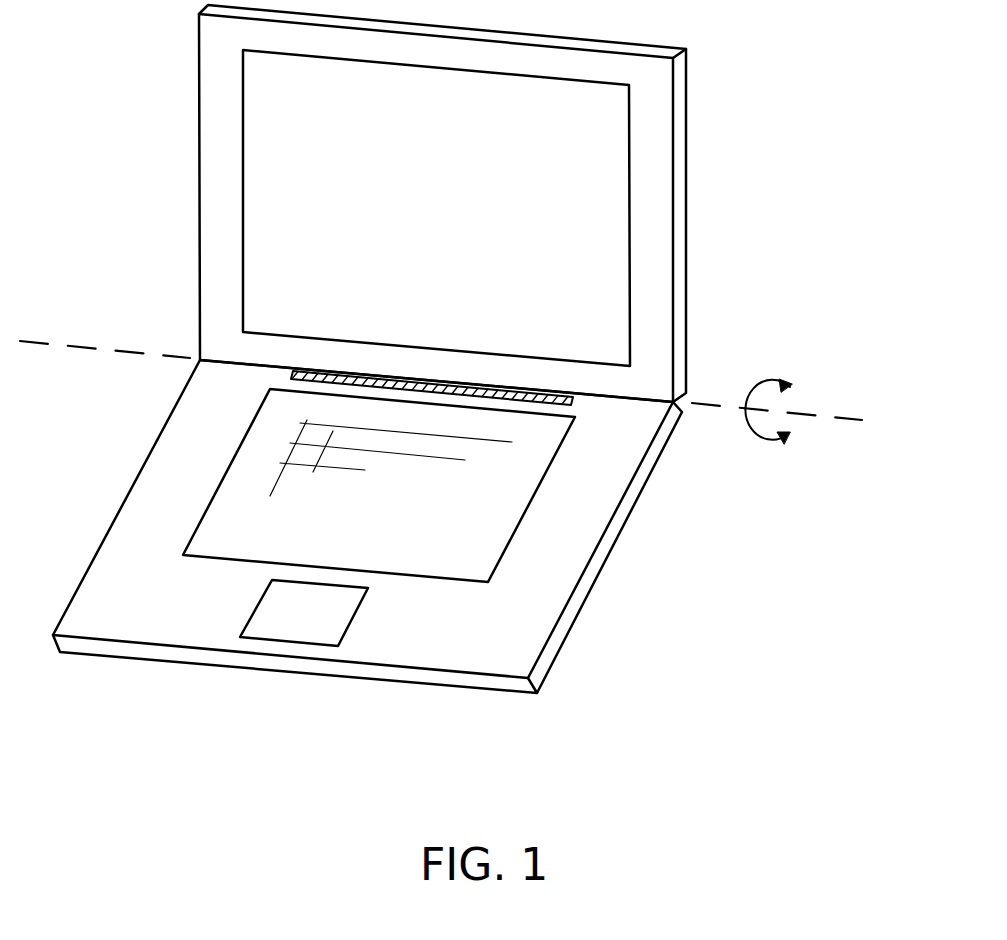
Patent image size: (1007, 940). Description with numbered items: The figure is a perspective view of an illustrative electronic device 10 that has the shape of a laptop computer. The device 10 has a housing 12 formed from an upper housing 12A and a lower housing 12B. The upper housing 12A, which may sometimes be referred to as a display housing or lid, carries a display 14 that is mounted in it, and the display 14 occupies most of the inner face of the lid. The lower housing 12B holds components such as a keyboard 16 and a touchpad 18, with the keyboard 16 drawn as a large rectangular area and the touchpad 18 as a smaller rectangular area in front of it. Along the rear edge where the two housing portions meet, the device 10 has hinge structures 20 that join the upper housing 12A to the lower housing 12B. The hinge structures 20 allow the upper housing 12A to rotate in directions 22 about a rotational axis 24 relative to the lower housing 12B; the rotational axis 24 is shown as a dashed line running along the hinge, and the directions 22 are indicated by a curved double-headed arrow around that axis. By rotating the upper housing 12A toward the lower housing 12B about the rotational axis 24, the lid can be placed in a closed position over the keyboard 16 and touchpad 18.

The electronic device 10 is at (765, 48).
The housing 12 is at (399, 349).
The upper housing 12A is at (185, 15).
The lower housing 12B is at (177, 366).
The display 14 is at (589, 195).
The keyboard 16 is at (530, 505).
The touchpad 18 is at (353, 623).
The hinge structures 20 is at (543, 390).
The directions 22 is at (768, 443).
The rotational axis 24 is at (70, 347).